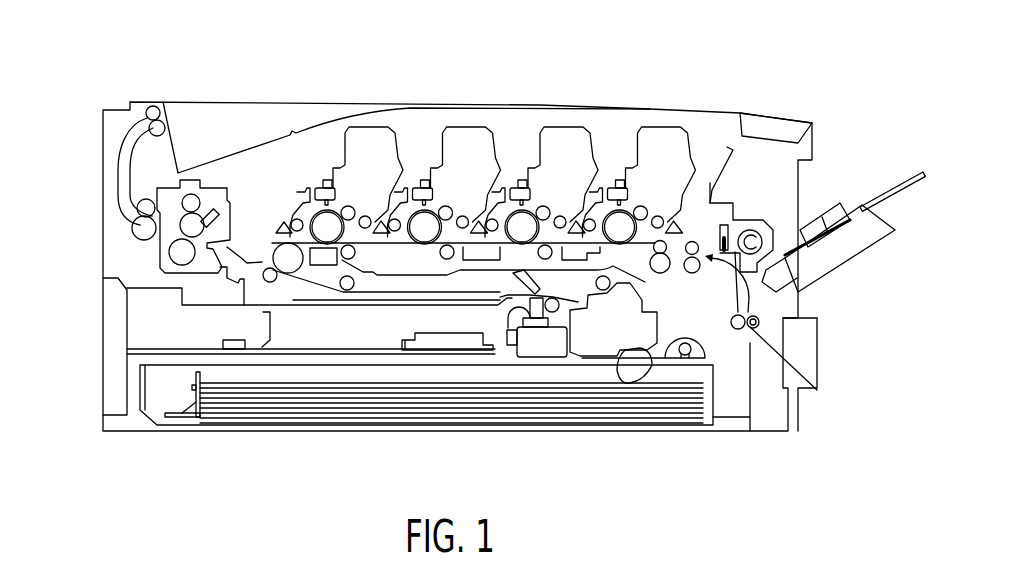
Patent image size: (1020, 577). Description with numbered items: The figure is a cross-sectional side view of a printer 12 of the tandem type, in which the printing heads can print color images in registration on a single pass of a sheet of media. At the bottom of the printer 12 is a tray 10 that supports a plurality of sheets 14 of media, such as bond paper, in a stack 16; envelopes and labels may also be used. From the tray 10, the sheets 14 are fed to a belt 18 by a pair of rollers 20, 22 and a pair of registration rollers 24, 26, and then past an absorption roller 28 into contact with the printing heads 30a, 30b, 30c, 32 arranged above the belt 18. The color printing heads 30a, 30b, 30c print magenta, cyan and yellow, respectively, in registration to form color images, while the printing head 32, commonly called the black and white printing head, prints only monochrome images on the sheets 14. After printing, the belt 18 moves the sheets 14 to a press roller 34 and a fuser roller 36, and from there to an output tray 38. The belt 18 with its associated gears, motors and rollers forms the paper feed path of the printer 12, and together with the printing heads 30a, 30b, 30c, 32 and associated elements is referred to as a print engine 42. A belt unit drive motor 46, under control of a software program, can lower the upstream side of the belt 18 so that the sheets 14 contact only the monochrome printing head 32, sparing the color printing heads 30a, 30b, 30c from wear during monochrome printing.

The tray 10 is at (142, 388).
The printer 12 is at (815, 122).
The sheets 14 is at (360, 383).
The stack 16 is at (205, 407).
The belt 18 is at (645, 282).
The roller 20 is at (817, 390).
The roller 22 is at (763, 328).
The registration roller 24 is at (737, 222).
The registration roller 26 is at (692, 248).
The absorption roller 28 is at (660, 247).
The color printing head 30a is at (664, 138).
The color printing head 30b is at (572, 138).
The color printing head 30c is at (472, 138).
The monochrome printing head 32 is at (372, 138).
The press roller 34 is at (180, 250).
The fuser roller 36 is at (190, 225).
The output tray 38 is at (277, 138).
The print engine 42 is at (87, 291).
The belt unit drive motor 46 is at (527, 345).